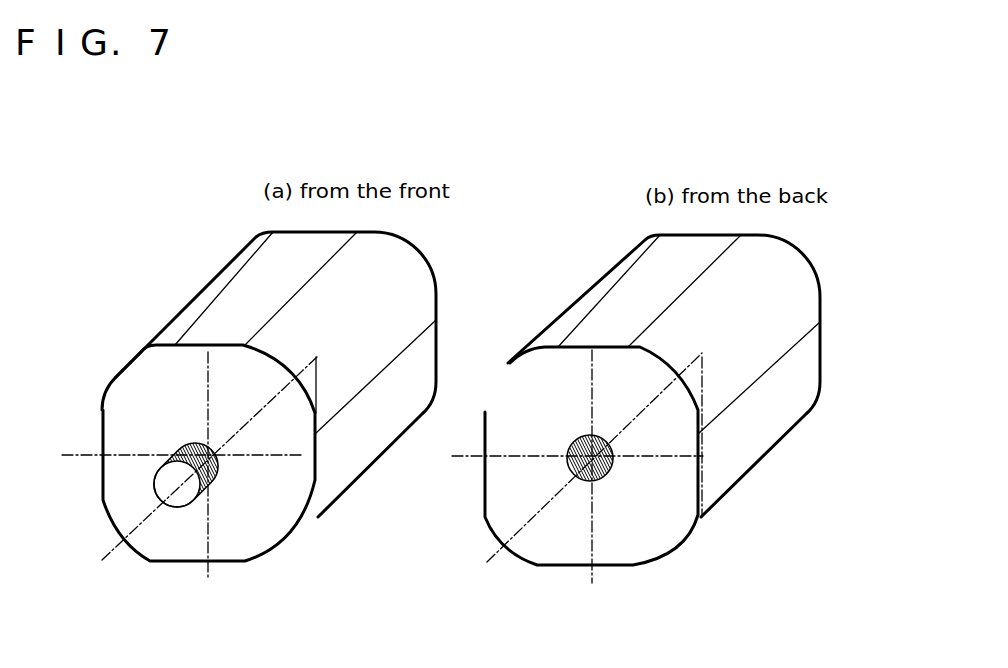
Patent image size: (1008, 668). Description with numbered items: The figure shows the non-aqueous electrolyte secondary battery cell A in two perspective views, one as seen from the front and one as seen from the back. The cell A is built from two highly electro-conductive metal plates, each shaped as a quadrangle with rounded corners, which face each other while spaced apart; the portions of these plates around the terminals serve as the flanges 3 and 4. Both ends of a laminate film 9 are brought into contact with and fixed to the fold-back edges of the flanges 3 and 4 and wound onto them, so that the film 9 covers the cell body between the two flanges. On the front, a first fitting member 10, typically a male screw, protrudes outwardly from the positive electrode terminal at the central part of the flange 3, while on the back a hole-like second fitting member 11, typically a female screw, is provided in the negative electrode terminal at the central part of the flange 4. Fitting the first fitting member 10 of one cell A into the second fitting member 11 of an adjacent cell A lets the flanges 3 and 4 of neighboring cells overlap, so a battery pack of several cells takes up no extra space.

The non-aqueous electrolyte secondary battery cell A is at (432, 267).
The flange 3 is at (243, 534).
The flange 4 is at (627, 550).
The laminate film 9 is at (238, 299).
The first fitting member 10 is at (185, 494).
The second fitting member 11 is at (580, 480).